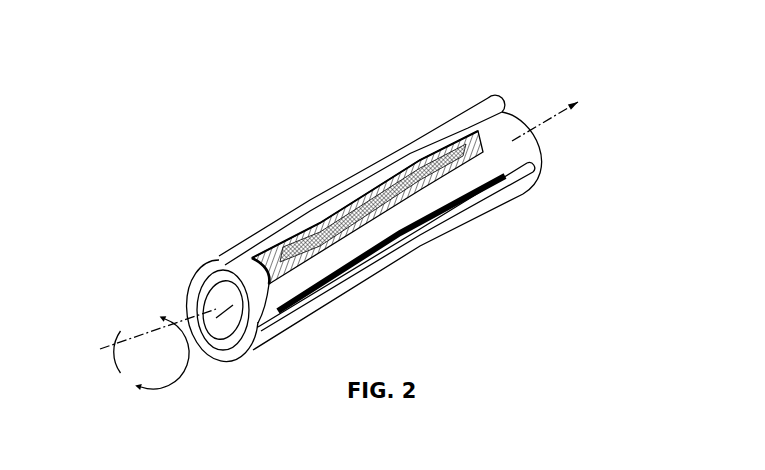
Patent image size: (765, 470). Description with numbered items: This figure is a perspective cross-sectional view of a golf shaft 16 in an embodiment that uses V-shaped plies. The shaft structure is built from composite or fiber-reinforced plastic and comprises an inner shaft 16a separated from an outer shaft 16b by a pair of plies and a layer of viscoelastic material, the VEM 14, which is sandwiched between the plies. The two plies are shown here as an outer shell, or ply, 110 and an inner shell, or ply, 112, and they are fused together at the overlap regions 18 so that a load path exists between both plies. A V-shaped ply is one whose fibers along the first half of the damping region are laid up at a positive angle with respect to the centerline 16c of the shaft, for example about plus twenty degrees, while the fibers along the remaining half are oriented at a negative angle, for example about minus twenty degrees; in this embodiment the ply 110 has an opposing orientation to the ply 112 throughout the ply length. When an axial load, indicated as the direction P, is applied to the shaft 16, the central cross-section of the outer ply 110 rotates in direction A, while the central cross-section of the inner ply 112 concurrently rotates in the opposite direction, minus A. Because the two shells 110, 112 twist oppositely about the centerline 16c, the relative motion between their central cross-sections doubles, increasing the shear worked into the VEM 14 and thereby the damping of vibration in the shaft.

The VEM 14 is at (447, 228).
The golf shaft 16 is at (336, 223).
The inner shaft 16a is at (509, 129).
The outer shaft 16b is at (485, 99).
The centerline 16c is at (138, 354).
The overlap regions 18 is at (477, 144).
The outer shell (ply) 110 is at (480, 138).
The inner shell (ply) 112 is at (479, 158).
The direction P is at (556, 116).